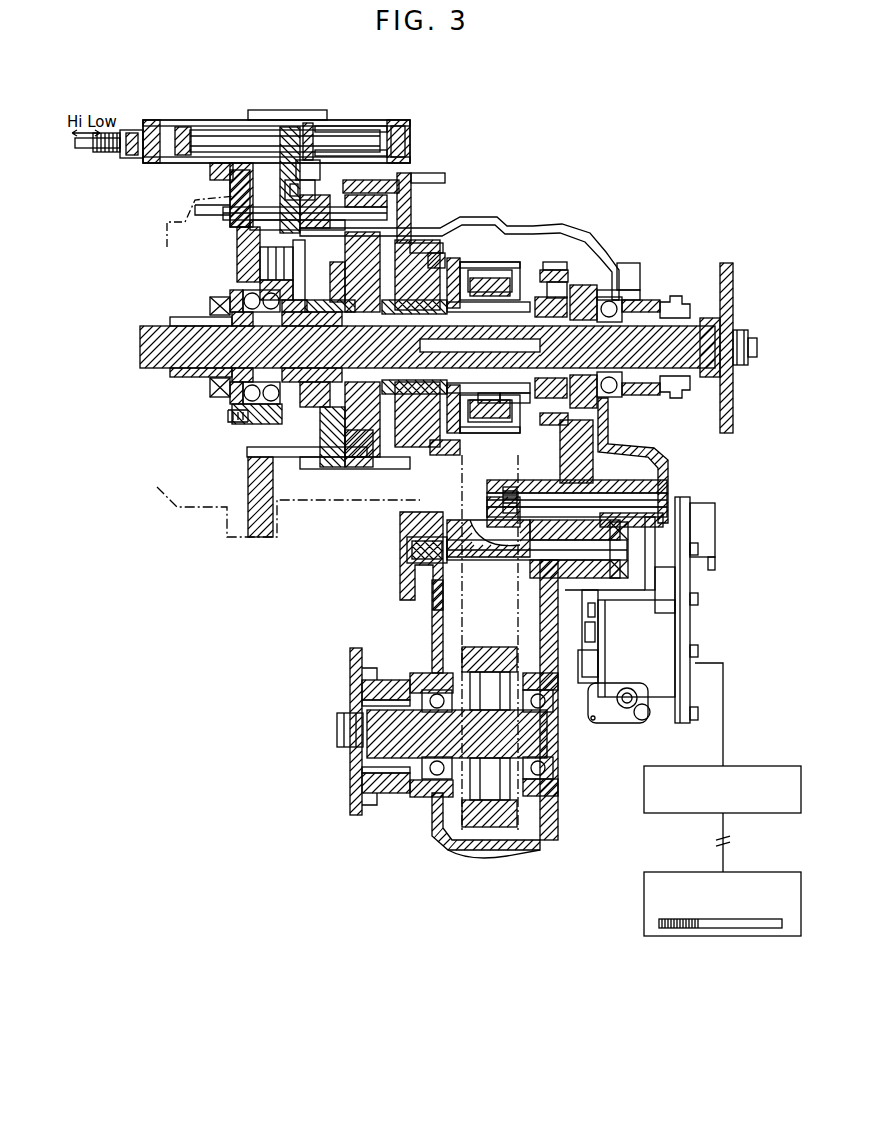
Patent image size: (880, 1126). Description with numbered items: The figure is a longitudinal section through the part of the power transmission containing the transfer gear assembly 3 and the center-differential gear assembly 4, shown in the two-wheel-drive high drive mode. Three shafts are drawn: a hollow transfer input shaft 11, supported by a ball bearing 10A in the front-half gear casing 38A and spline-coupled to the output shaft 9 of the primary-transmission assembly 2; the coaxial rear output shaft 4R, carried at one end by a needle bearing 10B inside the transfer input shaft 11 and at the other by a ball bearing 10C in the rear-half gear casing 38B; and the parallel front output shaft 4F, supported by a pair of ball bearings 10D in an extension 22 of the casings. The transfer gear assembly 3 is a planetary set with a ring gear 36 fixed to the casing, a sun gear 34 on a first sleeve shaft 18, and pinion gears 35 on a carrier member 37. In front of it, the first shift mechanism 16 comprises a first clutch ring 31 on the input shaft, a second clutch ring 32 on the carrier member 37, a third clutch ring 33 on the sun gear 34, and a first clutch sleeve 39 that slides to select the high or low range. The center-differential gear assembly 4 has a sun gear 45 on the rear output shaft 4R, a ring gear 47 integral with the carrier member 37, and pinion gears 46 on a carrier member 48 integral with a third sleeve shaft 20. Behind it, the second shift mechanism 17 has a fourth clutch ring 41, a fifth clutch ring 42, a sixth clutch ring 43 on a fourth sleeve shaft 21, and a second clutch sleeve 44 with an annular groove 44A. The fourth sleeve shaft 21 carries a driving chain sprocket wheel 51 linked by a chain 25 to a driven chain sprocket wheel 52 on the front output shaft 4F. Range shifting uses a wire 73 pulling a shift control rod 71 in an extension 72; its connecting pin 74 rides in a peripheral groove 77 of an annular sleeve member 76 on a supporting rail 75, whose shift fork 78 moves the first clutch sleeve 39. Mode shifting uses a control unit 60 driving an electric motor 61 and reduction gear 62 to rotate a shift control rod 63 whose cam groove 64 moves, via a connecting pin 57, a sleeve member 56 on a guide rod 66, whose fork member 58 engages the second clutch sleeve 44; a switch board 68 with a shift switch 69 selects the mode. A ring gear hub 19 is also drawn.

The primary-transmission assembly 2 is at (177, 512).
The transfer gear assembly 3 is at (313, 455).
The center-differential gear assembly 4 is at (452, 240).
The front output shaft 4F is at (350, 760).
The rear output shaft 4R is at (680, 395).
The output shaft 9 is at (152, 368).
The ball bearing 10A is at (252, 398).
The needle bearing 10B is at (246, 388).
The ball bearing 10C is at (652, 300).
The ball bearings 10D is at (437, 795).
The transfer input shaft 11 is at (205, 377).
The first shift mechanism 16 is at (262, 262).
The second shift mechanism 17 is at (500, 260).
The first sleeve shaft 18 is at (322, 408).
The ring gear 19 is at (352, 447).
The third sleeve shaft 20 is at (528, 300).
The fourth sleeve shaft 21 is at (523, 284).
The extension 22 is at (432, 640).
The chain 25 is at (430, 614).
The first externally-splined clutch ring 31 is at (302, 312).
The second internally-splined clutch ring 32 is at (262, 275).
The third externally-splined clutch ring 33 is at (340, 282).
The sun gear 34 is at (432, 240).
The pinion gears 35 is at (393, 228).
The ring gear 36 is at (372, 462).
The carrier member 37 is at (362, 452).
The front-half gear casing 38A is at (458, 222).
The rear-half gear casing 38B is at (665, 455).
The first splined clutch sleeve 39 is at (245, 290).
The fourth externally splined clutch ring 41 is at (638, 280).
The fifth externally splined clutch ring 42 is at (565, 268).
The sixth externally splined clutch ring 43 is at (558, 266).
The second clutch sleeve 44 is at (572, 268).
The annular groove 44A is at (580, 262).
The sun gear 45 is at (432, 252).
The pinion gears 46 is at (452, 266).
The ring gear 47 is at (445, 455).
The carrier member 48 is at (490, 402).
The driving chain sprocket wheel 51 is at (504, 402).
The driven chain sprocket wheel 52 is at (491, 655).
The sleeve member 56 is at (495, 488).
The connecting pin 57 is at (535, 505).
The fork member 58 is at (577, 498).
The control unit 60 is at (769, 764).
The reversible electric motor 61 is at (665, 641).
The reduction gear 62 is at (706, 540).
The shift control rod 63 is at (402, 550).
The cam groove 64 is at (510, 545).
The guide rod 66 is at (412, 535).
The switch board 68 is at (644, 898).
The shift switch 69 is at (659, 924).
The shift control rod 71 is at (212, 135).
The extension 72 is at (326, 120).
The wire 73 is at (78, 150).
The connecting pin 74 is at (285, 133).
The supporting rail 75 is at (366, 218).
The annular sleeve member 76 is at (285, 190).
The peripheral groove 77 is at (313, 160).
The shift fork 78 is at (250, 250).